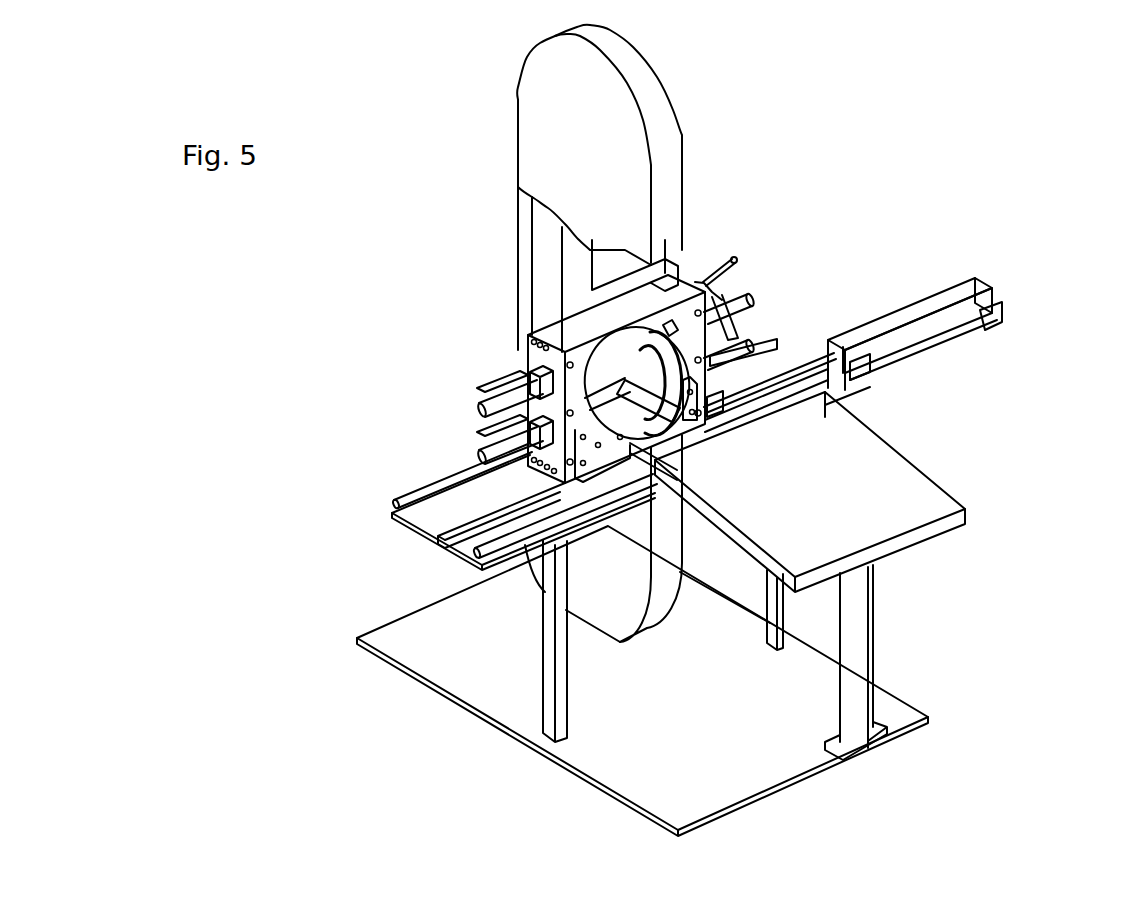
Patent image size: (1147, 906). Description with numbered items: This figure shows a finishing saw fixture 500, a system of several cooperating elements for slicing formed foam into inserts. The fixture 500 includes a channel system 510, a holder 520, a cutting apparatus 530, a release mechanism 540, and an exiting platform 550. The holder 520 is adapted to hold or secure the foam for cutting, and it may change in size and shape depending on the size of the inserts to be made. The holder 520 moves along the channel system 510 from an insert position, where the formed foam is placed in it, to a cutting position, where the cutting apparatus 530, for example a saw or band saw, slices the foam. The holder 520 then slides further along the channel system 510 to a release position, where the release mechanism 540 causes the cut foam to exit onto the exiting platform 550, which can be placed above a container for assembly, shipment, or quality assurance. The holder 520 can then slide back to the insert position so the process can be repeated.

The finishing saw fixture 500 is at (978, 123).
The channel system 510 is at (405, 498).
The holder 520 is at (552, 328).
The cutting apparatus 530 is at (575, 137).
The release mechanism 540 is at (732, 263).
The exiting platform 550 is at (822, 472).